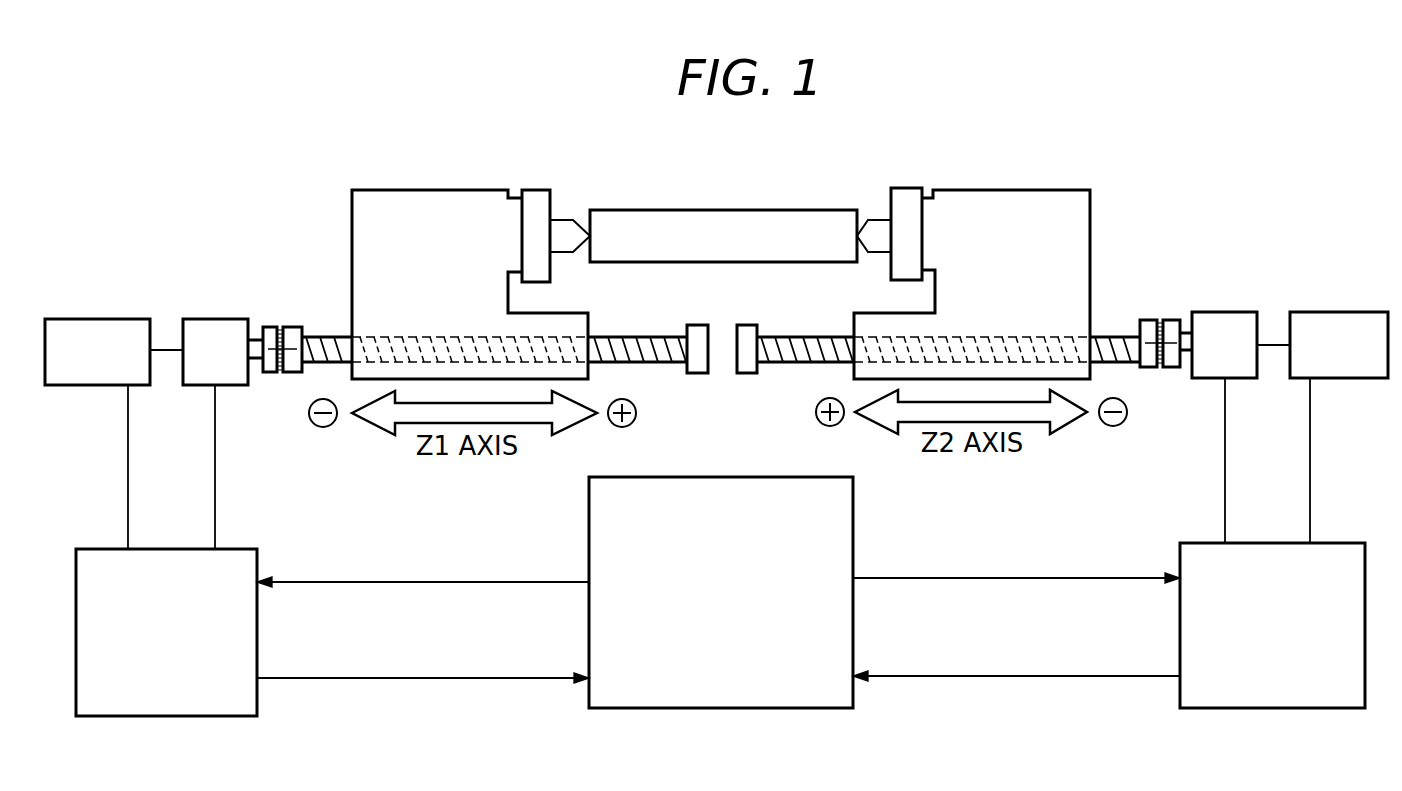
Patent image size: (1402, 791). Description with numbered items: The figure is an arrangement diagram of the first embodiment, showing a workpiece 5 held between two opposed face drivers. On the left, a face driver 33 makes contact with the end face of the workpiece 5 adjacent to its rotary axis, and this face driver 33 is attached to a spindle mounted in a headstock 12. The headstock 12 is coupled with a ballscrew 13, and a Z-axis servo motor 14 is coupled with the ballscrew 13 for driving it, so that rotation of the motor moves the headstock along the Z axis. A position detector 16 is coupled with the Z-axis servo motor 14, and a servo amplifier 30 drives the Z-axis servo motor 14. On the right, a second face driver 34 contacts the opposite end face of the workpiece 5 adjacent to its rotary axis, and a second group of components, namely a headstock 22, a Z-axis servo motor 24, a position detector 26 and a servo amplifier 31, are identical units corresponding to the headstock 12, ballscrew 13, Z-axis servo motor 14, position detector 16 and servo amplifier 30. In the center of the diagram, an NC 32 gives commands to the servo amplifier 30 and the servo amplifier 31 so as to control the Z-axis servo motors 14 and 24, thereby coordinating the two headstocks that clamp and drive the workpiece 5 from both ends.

The workpiece 5 is at (712, 210).
The headstock 12 is at (407, 190).
The ballscrew 13 is at (633, 337).
The Z-axis servo motor 14 is at (236, 319).
The position detector 16 is at (137, 319).
The headstock 22 is at (1057, 190).
The Z-axis servo motor 24 is at (1215, 312).
The position detector 26 is at (1308, 312).
The servo amplifier 30 is at (236, 716).
The servo amplifier 31 is at (1213, 708).
The NC 32 is at (830, 708).
The face driver 33 is at (543, 190).
The face driver 34 is at (872, 207).